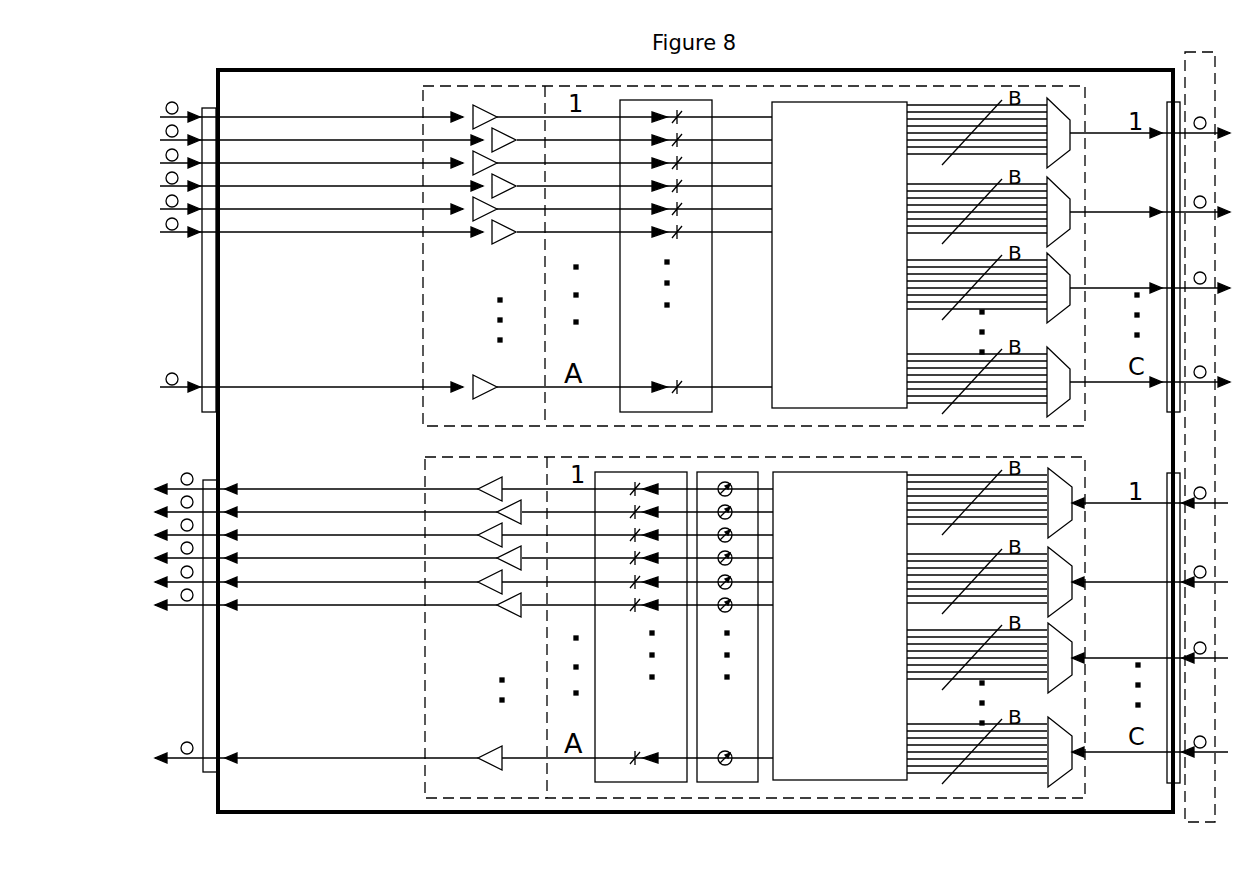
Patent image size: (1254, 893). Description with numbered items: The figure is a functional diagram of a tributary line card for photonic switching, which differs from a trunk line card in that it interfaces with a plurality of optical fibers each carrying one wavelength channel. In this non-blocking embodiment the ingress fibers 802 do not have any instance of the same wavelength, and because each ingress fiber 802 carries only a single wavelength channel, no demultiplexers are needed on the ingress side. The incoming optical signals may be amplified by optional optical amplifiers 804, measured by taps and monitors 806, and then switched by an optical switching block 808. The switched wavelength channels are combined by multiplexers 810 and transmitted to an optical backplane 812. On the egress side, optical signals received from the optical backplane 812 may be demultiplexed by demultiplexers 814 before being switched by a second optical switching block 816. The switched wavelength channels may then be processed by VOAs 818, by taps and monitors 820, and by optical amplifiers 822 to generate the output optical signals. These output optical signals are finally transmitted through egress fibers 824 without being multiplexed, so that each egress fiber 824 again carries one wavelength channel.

The ingress fibers 802 is at (187, 247).
The optical amplifiers 804 is at (510, 245).
The taps and monitors 806 is at (697, 287).
The optical switching block 808 is at (839, 255).
The multiplexers 810 is at (1060, 116).
The optical backplane 812 is at (1192, 62).
The demultiplexers 814 is at (1063, 484).
The optical switching block 816 is at (840, 626).
The VOAs 818 is at (742, 774).
The taps and monitors 820 is at (677, 774).
The optical amplifiers 822 is at (517, 618).
The egress fibers 824 is at (187, 611).